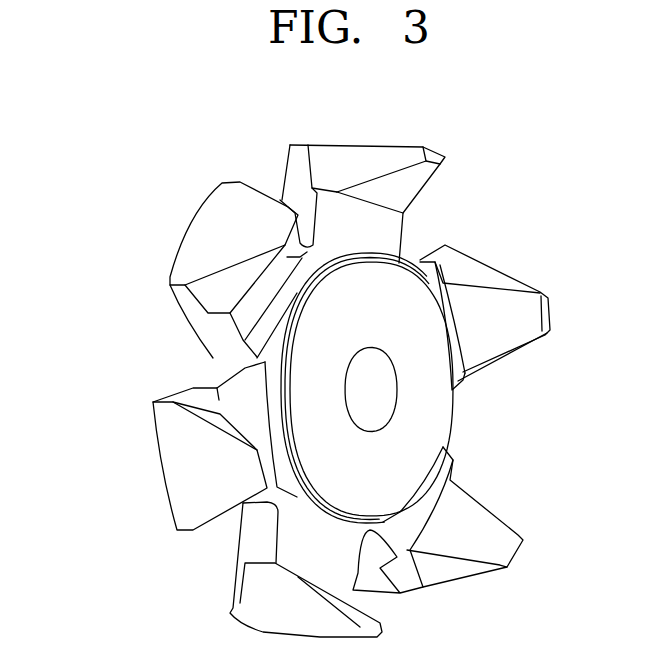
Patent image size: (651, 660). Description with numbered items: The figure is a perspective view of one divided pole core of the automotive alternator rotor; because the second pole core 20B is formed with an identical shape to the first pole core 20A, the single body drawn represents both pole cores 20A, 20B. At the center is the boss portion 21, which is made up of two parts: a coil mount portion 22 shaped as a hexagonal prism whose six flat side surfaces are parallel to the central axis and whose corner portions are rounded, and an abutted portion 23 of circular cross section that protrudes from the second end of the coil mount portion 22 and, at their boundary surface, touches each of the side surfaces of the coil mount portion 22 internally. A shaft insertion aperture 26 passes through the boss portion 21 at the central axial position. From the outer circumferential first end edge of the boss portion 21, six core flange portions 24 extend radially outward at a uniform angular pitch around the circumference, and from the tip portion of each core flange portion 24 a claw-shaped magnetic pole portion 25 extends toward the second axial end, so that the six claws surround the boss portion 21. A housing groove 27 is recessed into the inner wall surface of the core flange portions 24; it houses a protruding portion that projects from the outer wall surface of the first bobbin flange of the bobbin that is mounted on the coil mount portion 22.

The first pole core 20A is at (210, 108).
The second pole core 20B is at (298, 356).
The boss portion 21 is at (78, 365).
The coil mount portion 22 is at (268, 362).
The abutted portion 23 is at (307, 392).
The core flange portion 24 is at (385, 237).
The claw-shaped magnetic pole portion 25 is at (391, 158).
The shaft insertion aperture 26 is at (380, 403).
The housing groove 27 is at (252, 333).